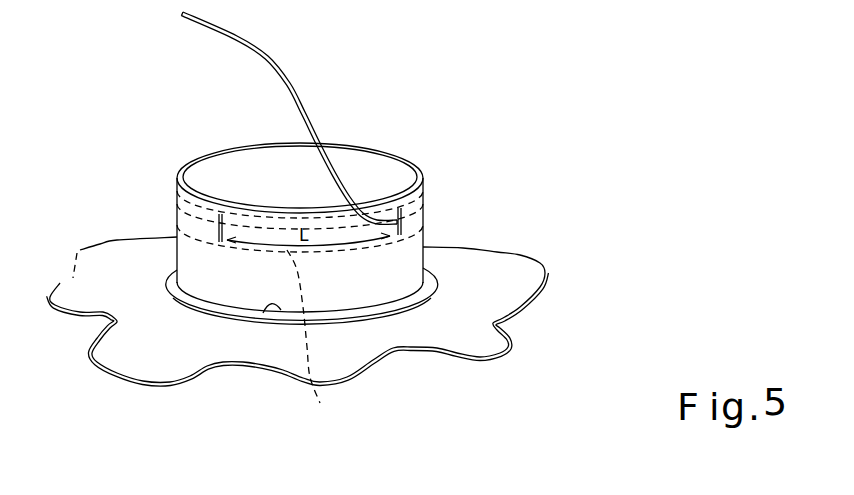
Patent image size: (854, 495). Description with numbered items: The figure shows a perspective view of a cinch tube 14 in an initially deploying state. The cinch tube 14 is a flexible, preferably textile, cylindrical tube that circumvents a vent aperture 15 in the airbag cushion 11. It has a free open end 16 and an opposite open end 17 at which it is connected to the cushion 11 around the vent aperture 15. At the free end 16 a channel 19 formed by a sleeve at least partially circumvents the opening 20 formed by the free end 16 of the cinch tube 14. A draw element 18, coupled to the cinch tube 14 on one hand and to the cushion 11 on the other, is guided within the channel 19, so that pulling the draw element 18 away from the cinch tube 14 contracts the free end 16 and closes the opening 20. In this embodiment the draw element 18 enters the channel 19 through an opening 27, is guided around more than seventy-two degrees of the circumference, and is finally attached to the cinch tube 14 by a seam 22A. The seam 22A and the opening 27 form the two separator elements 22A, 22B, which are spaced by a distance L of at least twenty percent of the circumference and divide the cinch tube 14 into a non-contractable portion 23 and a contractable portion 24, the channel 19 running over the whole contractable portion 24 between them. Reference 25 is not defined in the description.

The airbag cushion 11 is at (148, 318).
The cinch tube 14 is at (169, 145).
The vent aperture 15 is at (263, 313).
The free open end 16 is at (407, 157).
The opposite open end 17 is at (409, 297).
The draw element 18 is at (302, 106).
The channel 19 is at (399, 200).
The opening 20 is at (237, 176).
The separator element (seam) 22A is at (219, 242).
The separator element 22B is at (399, 235).
The non-contractable portion 23 is at (314, 348).
The contractable portion 24 is at (260, 143).
The groove 25 is at (178, 208).
The opening 27 is at (400, 226).